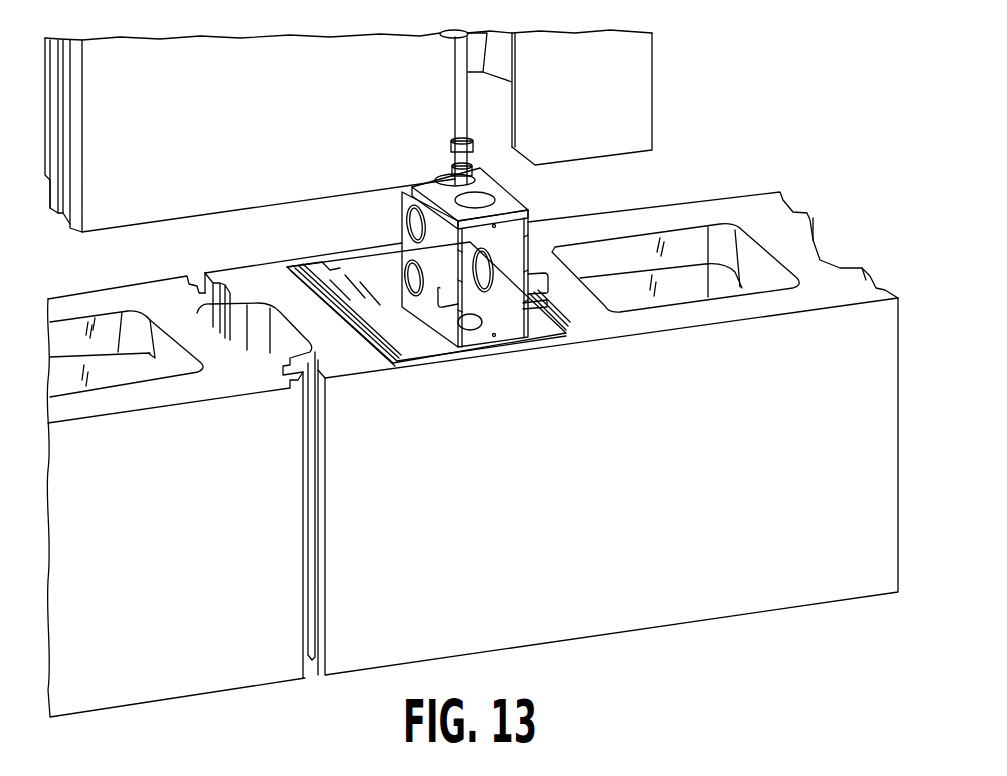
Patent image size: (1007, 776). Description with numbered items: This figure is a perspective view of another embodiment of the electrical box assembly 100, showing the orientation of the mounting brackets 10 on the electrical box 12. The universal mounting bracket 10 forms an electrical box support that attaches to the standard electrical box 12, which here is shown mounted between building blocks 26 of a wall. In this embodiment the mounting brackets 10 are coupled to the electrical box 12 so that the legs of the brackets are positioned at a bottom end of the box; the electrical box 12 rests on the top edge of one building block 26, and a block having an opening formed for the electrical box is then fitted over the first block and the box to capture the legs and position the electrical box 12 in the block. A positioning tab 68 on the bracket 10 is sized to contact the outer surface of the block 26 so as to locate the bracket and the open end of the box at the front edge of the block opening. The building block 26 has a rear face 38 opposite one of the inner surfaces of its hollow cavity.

The universal mounting bracket 10 is at (576, 331).
The electrical box 12 is at (520, 192).
The building block 26 is at (786, 191).
The rear face 38 is at (360, 292).
The positioning tab 68 is at (544, 284).
The electrical box assembly 100 is at (502, 304).